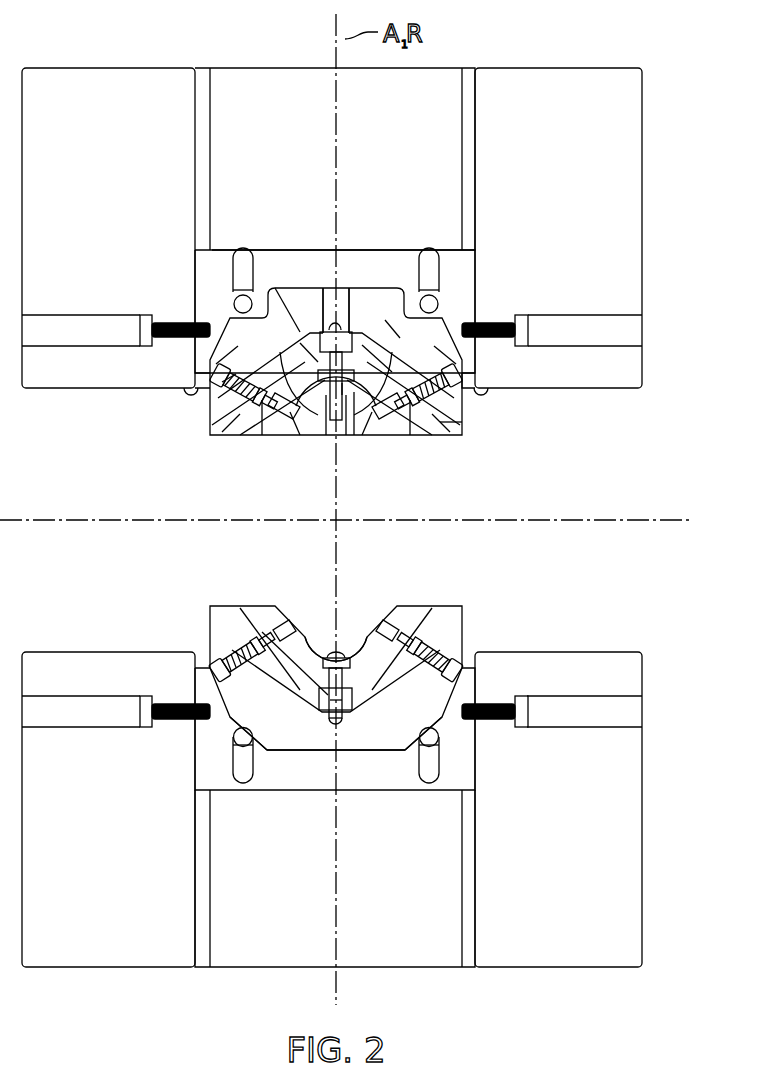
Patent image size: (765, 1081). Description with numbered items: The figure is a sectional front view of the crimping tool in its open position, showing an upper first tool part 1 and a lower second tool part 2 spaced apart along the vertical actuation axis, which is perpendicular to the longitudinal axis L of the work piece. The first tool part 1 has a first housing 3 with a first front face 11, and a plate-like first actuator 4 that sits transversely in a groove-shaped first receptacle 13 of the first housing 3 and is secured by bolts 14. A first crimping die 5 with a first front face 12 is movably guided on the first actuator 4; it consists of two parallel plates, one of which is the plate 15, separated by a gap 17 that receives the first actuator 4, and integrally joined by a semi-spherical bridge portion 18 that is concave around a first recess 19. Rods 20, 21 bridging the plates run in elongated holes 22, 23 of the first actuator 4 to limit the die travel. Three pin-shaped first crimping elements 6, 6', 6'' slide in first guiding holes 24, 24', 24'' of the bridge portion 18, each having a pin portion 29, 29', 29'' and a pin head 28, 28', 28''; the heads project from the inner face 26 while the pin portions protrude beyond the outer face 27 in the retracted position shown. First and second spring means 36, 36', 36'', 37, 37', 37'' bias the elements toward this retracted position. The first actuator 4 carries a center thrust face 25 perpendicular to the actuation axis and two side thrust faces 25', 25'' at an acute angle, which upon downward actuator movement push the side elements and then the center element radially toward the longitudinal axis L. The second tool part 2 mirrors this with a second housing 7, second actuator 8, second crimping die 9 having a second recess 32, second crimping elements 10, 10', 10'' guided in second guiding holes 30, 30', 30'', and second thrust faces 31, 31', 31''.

The first tool part 1 is at (693, 120).
The second tool part 2 is at (695, 815).
The first housing 3 is at (624, 188).
The first actuator 4 is at (470, 283).
The first crimping die 5 is at (475, 410).
The first crimping element 6 is at (350, 363).
The first crimping element 6' is at (278, 413).
The first crimping element 6'' is at (394, 415).
The second housing 7 is at (620, 745).
The second actuator 8 is at (460, 766).
The second crimping die 9 is at (476, 612).
The second crimping element 10 is at (360, 693).
The second crimping element 10' is at (263, 605).
The second crimping element 10'' is at (412, 605).
The first front face 11 is at (622, 390).
The first front face 12 is at (484, 388).
The first receptacle 13 is at (200, 390).
The bolts 14 is at (140, 333).
The plate 15 is at (451, 435).
The gap 17 is at (400, 325).
The bridge portion 18 is at (362, 428).
The first recess 19 is at (284, 435).
The rod 20 is at (440, 306).
The rod 21 is at (233, 306).
The elongated hole 22 is at (458, 250).
The elongated hole 23 is at (230, 288).
The first guiding hole 24 is at (396, 354).
The first guiding hole 24' is at (221, 444).
The first guiding hole 24'' is at (409, 457).
The first thrust face 25 is at (289, 292).
The first thrust face 25' is at (242, 342).
The first thrust face 25'' is at (474, 352).
The inner face 26 is at (322, 400).
The outer face 27 is at (323, 320).
The pin head 28 is at (350, 400).
The pin head 28' is at (305, 449).
The pin head 28'' is at (378, 427).
The pin portion 29 is at (363, 292).
The pin portion 29' is at (228, 431).
The pin portion 29'' is at (429, 392).
The second guiding hole 30 is at (315, 721).
The second guiding hole 30' is at (217, 646).
The second guiding hole 30'' is at (439, 625).
The second thrust face 31 is at (336, 758).
The second thrust face 31' is at (251, 714).
The second thrust face 31'' is at (424, 714).
The second recess 32 is at (342, 640).
The first spring means 36 is at (296, 335).
The first spring means 36' is at (244, 362).
The first spring means 36'' is at (434, 449).
The second spring means 37 is at (296, 651).
The second spring means 37' is at (248, 629).
The second spring means 37'' is at (448, 649).
The longitudinal axis L is at (336, 535).